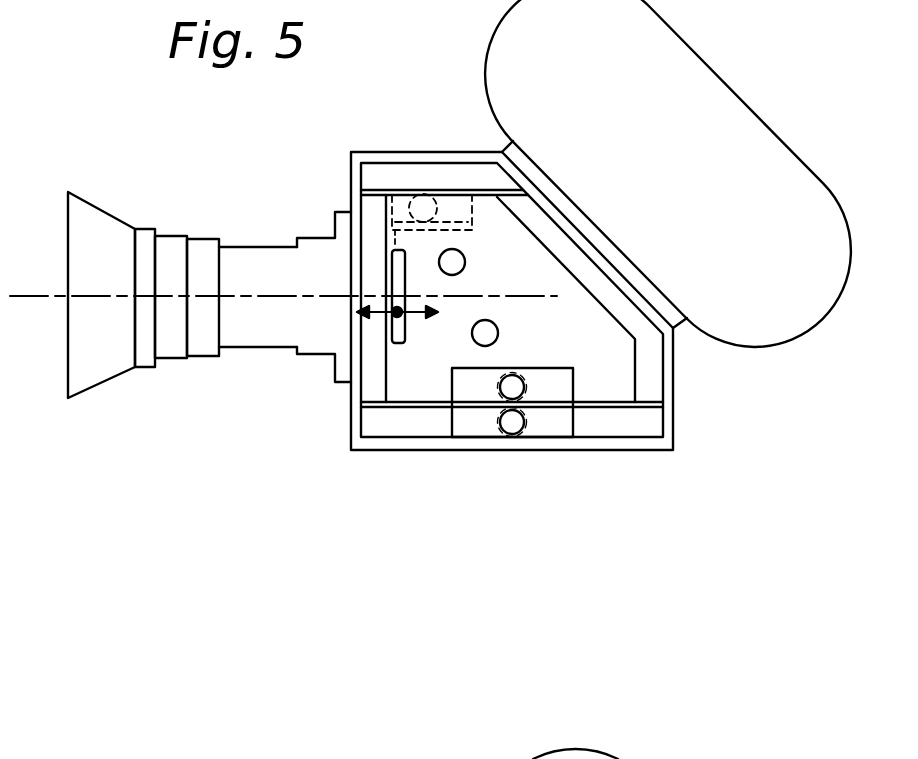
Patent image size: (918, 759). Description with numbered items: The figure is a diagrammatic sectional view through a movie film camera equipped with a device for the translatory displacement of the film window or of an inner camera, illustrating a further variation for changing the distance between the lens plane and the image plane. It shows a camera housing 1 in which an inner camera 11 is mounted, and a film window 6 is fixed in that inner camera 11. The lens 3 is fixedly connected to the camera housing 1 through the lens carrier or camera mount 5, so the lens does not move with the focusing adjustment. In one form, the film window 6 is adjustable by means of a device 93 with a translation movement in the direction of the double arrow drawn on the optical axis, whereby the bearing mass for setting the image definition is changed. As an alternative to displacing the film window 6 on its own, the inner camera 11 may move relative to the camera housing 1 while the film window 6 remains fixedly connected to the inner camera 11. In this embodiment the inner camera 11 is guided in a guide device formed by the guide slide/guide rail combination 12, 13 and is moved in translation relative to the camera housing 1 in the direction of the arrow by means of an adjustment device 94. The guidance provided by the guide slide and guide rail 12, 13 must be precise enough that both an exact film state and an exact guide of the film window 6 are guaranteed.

The camera housing 1 is at (672, 362).
The lens 3 is at (255, 268).
The camera mount 5 is at (350, 212).
The film window 6 is at (405, 338).
The inner camera 11 is at (603, 378).
The guide slide 12 is at (372, 193).
The guide rail 13 is at (413, 412).
The device 93 is at (453, 207).
The adjustment device 94 is at (553, 417).